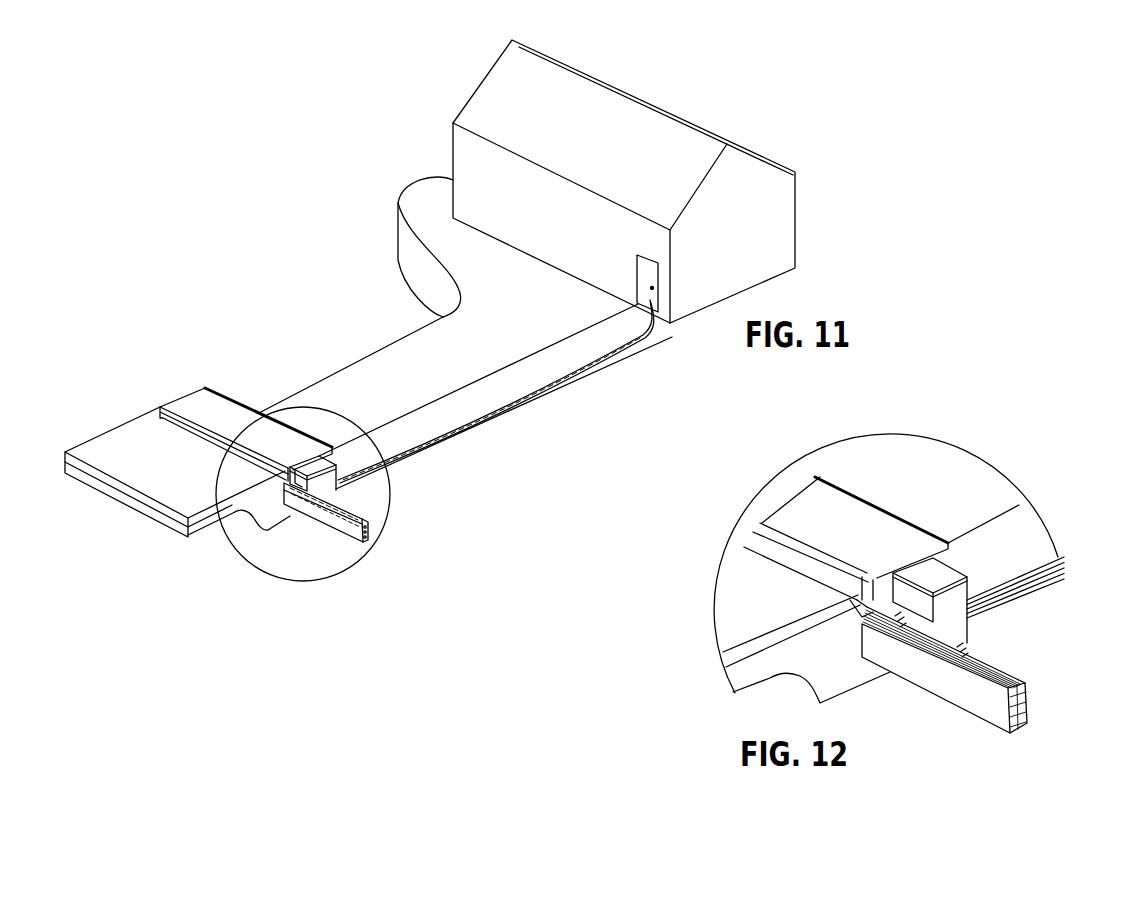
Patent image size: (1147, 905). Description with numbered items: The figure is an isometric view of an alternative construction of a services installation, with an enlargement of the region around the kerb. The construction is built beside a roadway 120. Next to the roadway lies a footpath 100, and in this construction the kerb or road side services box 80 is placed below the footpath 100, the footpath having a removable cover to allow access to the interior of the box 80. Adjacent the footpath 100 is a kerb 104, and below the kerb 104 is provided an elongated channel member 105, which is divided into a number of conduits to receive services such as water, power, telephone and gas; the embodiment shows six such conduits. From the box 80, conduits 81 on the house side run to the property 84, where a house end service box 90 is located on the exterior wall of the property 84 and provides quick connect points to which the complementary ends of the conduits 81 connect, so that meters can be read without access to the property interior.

In FIG. 11, the kerb side services box 80 is at (338, 477).
In FIG. 12, the kerb side services box 80 is at (948, 627).
In FIG. 11, the conduits 81 is at (483, 418).
In FIG. 12, the conduits 81 is at (1030, 567).
In FIG. 11, the property 84 is at (465, 333).
In FIG. 11, the house end service box 90 is at (652, 291).
In FIG. 11, the footpath 100 is at (224, 410).
In FIG. 12, the footpath 100 is at (840, 518).
In FIG. 11, the kerb 104 is at (180, 410).
In FIG. 12, the kerb 104 is at (766, 540).
In FIG. 11, the channel member 105 is at (340, 525).
In FIG. 12, the channel member 105 is at (985, 700).
In FIG. 11, the roadway 120 is at (177, 472).
In FIG. 12, the roadway 120 is at (806, 641).